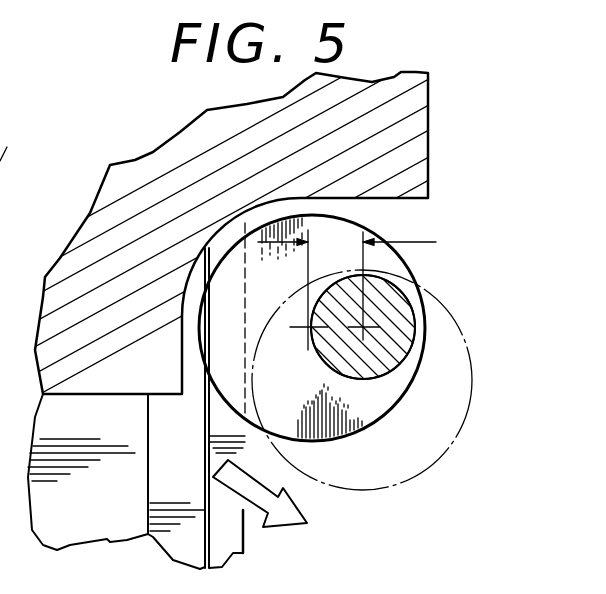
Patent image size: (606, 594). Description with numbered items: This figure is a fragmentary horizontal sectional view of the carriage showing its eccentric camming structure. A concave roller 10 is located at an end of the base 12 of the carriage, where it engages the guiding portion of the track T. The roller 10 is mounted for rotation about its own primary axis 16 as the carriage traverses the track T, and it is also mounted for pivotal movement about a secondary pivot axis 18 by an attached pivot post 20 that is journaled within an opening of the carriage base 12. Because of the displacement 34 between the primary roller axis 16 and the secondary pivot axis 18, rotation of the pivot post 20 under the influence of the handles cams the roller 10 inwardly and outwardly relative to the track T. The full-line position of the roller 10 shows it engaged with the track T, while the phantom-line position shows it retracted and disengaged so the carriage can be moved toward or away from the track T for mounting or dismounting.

The concave roller 10 is at (364, 410).
The base 12 is at (196, 143).
The primary axis 16 is at (304, 338).
The secondary pivot axis 18 is at (402, 306).
The pivot post 20 is at (396, 283).
The displacement 34 is at (347, 246).
The track T is at (235, 543).